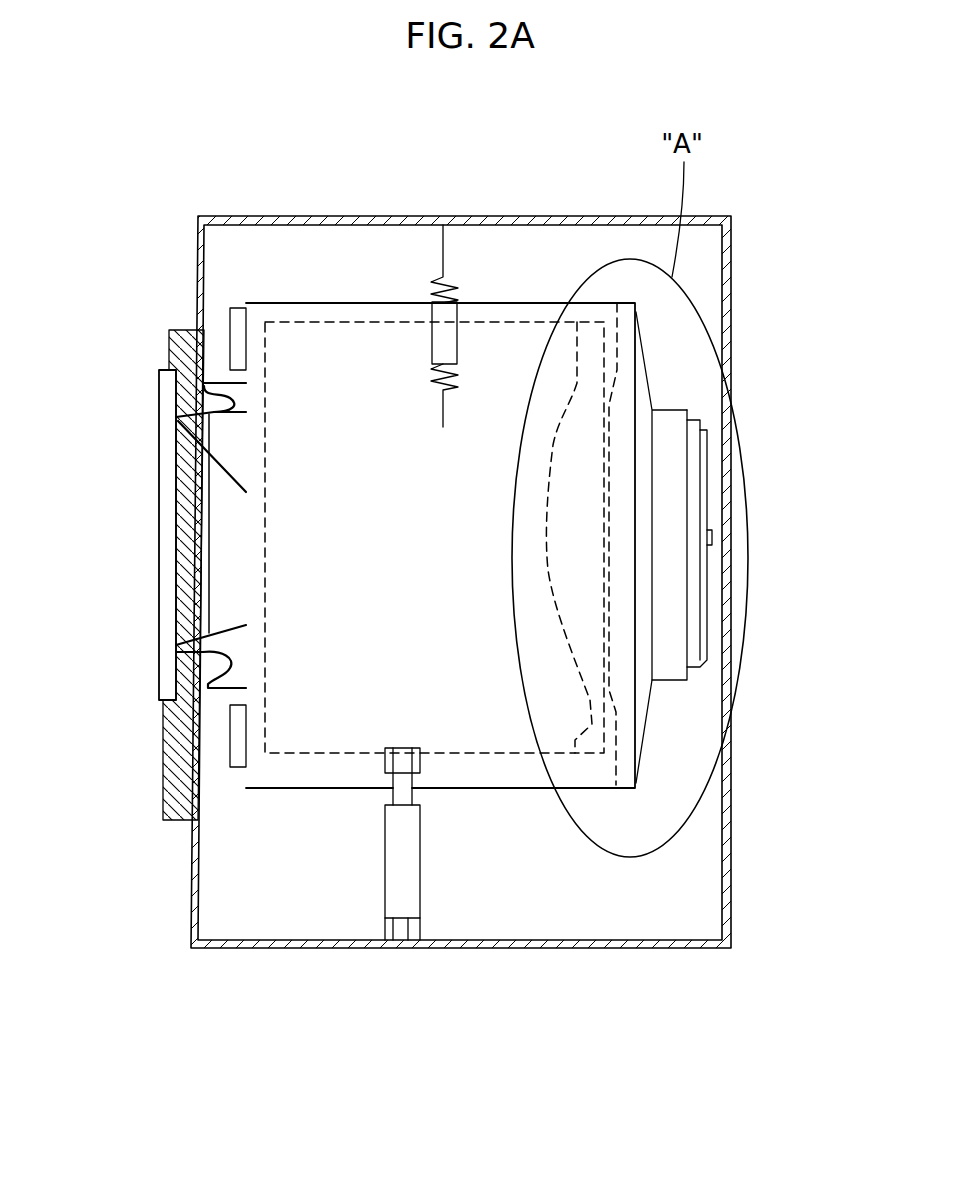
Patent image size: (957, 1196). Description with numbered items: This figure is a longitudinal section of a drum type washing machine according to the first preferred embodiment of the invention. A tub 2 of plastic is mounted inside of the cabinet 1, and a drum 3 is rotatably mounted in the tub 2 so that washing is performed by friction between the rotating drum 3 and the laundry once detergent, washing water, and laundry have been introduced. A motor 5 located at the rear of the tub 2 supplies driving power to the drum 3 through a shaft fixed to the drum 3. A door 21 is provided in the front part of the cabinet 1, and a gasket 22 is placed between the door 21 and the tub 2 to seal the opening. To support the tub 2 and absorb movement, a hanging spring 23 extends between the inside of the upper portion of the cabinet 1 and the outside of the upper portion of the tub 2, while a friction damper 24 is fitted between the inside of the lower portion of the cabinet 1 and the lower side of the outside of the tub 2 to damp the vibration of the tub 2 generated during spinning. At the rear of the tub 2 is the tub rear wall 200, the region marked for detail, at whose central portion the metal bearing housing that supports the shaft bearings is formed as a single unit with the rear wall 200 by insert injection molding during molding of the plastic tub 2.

The cabinet 1 is at (272, 216).
The tub 2 is at (528, 303).
The drum 3 is at (355, 322).
The motor 5 is at (690, 606).
The door 21 is at (166, 532).
The gasket 22 is at (215, 690).
The hanging spring 23 is at (449, 291).
The friction damper 24 is at (393, 877).
The rear wall of the tub 200 is at (650, 362).